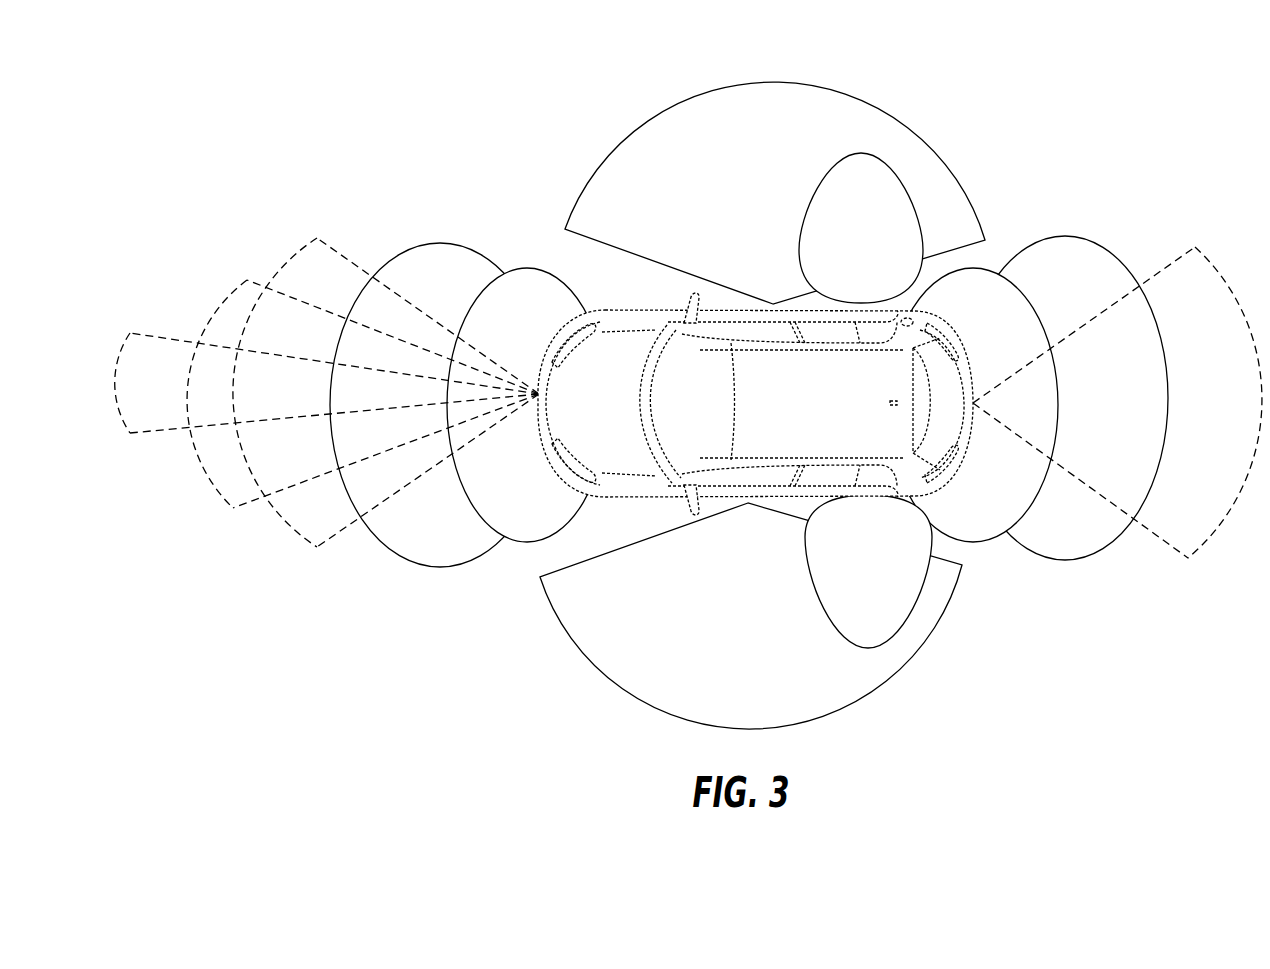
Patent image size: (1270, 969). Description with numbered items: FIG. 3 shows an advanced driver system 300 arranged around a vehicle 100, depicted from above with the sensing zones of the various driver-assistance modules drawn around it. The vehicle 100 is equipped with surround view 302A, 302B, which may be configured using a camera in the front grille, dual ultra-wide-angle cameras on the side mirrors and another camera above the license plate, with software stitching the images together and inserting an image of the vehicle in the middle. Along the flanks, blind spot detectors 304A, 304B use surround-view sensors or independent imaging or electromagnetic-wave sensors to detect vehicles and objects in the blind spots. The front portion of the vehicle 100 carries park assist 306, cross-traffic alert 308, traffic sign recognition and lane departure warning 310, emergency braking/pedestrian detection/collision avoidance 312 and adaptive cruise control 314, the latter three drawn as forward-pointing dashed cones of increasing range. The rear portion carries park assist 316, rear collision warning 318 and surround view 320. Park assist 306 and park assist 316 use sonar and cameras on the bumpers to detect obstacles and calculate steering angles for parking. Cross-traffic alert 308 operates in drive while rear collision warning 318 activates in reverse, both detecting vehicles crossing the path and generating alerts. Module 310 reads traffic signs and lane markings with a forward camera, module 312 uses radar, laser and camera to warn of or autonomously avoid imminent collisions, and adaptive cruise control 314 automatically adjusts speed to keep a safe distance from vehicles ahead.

The vehicle 100 is at (819, 411).
The advanced driver system 300 is at (995, 75).
The surround view 302A is at (722, 181).
The surround view 302B is at (710, 654).
The blind spot detector 304A is at (889, 272).
The blind spot detector 304B is at (893, 606).
The park assist 306 is at (533, 266).
The cross-traffic alert 308 is at (442, 243).
The traffic sign recognition and lane departure warning 310 is at (320, 550).
The emergency braking/pedestrian detection/collision avoidance 312 is at (250, 283).
The adaptive cruise control 314 is at (127, 434).
The park assist 316 is at (995, 266).
The rear collision warning 318 is at (1066, 576).
The surround view 320 is at (1177, 262).